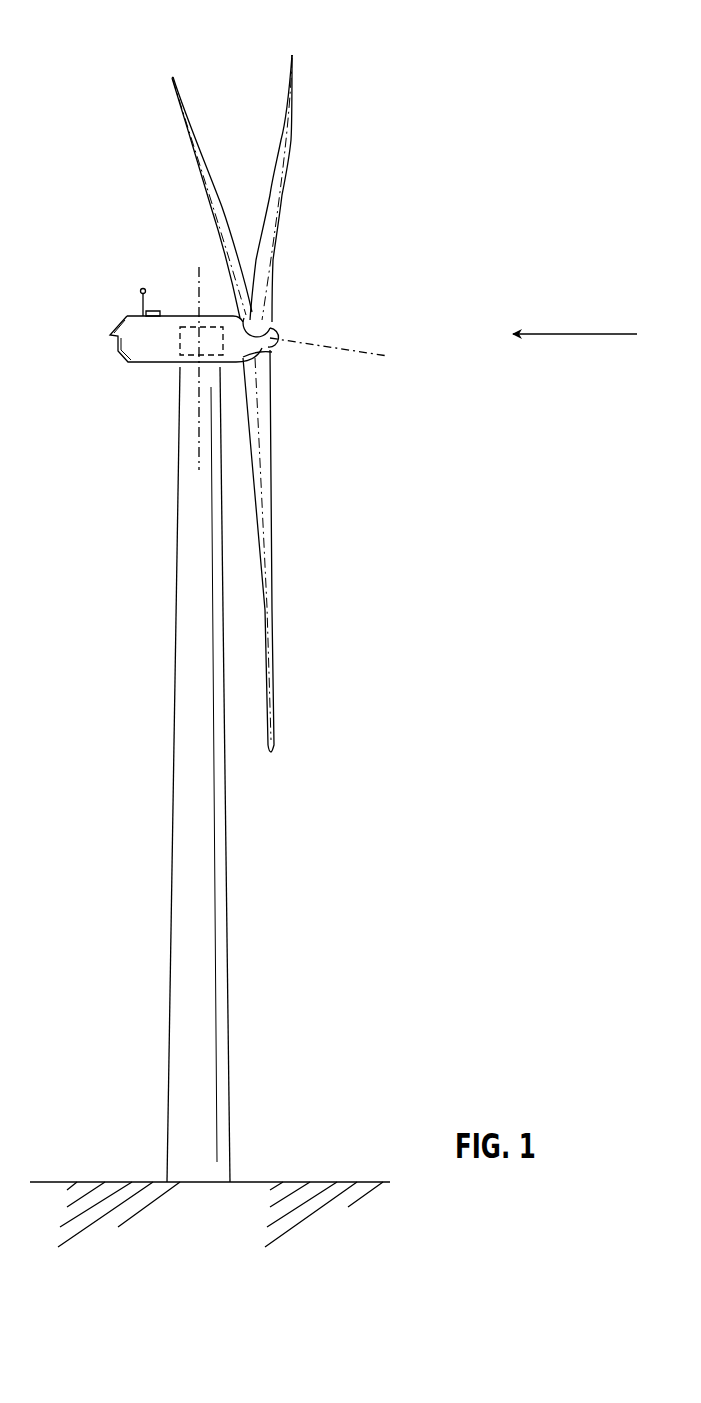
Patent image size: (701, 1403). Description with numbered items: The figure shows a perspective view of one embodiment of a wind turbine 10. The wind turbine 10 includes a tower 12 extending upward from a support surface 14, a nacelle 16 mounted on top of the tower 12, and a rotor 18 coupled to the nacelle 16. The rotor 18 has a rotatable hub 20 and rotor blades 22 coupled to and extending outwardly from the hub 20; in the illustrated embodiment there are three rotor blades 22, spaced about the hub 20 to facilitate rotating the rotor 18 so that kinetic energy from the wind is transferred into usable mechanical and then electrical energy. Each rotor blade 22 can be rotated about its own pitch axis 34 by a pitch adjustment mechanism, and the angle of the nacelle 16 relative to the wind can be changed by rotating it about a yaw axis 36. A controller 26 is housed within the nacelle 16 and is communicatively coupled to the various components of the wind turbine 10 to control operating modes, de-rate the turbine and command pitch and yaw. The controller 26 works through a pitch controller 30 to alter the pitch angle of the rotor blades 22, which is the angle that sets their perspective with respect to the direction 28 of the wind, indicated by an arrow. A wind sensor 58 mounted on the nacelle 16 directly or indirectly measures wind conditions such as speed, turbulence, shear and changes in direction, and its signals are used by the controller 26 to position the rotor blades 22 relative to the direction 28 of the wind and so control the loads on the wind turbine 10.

The wind turbine 10 is at (404, 151).
The tower 12 is at (171, 940).
The support surface 14 is at (138, 1181).
The nacelle 16 is at (150, 364).
The rotor 18 is at (300, 290).
The rotatable hub 20 is at (280, 325).
The rotor blade 22 is at (201, 183).
The controller 26 is at (190, 313).
The direction of the wind 28 is at (598, 333).
The pitch controller 30 is at (344, 358).
The pitch axis 34 is at (183, 138).
The yaw axis 36 is at (199, 407).
The wind sensor 58 is at (140, 312).